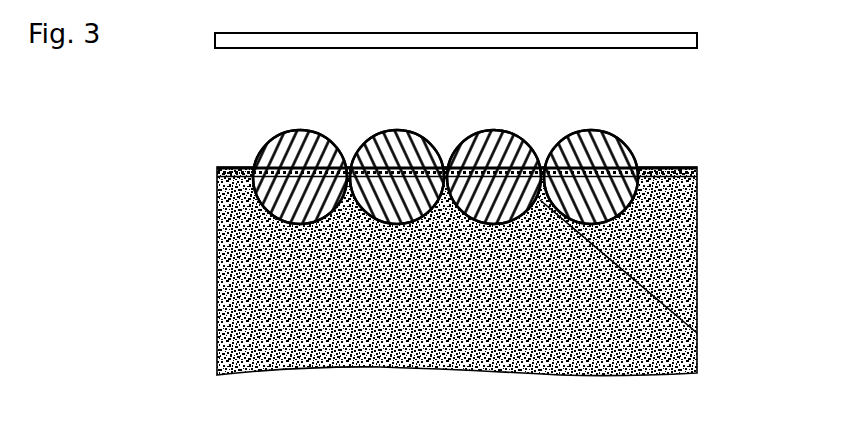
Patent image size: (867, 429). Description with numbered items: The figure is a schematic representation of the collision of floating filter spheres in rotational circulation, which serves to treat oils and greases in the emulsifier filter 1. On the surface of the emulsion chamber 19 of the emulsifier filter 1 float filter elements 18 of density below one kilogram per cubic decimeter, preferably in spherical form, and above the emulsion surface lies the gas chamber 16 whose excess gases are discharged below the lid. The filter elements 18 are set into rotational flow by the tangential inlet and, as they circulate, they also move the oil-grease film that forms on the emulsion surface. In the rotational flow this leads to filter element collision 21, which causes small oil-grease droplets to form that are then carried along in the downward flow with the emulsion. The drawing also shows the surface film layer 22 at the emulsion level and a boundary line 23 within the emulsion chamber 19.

The emulsifier filter 1 is at (674, 32).
The gas chamber 16 is at (752, 83).
The filter element 1 kg/dm³ 18 is at (636, 150).
The emulsion chamber 19 is at (675, 232).
The filter element collision 21 is at (350, 160).
The surface layer / band 22 is at (697, 169).
The boundary line 23 is at (697, 333).